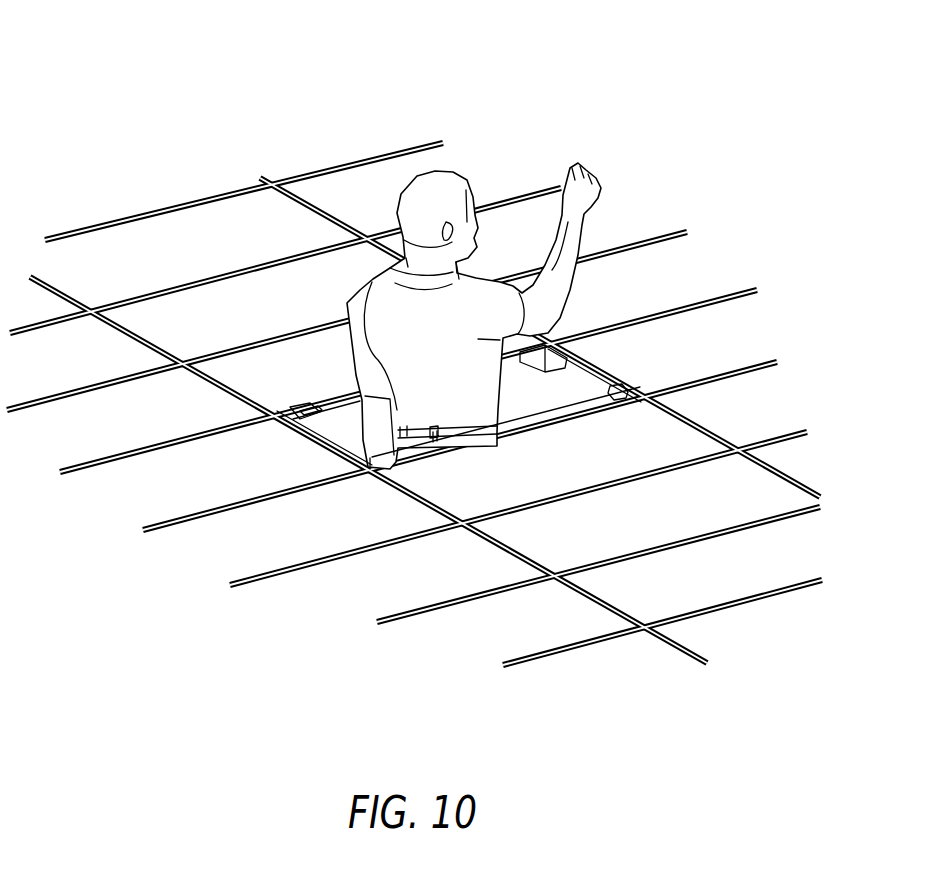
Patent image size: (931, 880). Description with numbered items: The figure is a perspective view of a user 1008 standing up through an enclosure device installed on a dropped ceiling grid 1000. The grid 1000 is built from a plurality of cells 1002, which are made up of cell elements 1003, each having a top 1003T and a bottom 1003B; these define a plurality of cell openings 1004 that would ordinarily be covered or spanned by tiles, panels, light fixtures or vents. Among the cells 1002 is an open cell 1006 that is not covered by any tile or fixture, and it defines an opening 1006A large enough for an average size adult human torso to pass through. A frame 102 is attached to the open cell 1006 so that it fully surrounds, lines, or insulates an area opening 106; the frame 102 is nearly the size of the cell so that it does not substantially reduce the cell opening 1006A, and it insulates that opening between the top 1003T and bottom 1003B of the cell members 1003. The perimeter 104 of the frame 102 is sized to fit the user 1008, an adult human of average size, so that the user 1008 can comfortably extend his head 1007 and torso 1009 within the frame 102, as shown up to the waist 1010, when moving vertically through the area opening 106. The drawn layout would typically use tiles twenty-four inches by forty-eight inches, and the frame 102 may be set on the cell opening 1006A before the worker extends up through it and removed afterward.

The dropped ceiling grid 1000 is at (275, 52).
The cells 1002 is at (222, 550).
The cell openings 1004 is at (463, 635).
The cell elements 1003 is at (345, 462).
The top 1003T is at (238, 386).
The bottom 1003B is at (243, 394).
The open cell 1006 is at (620, 381).
The opening 1006A is at (313, 437).
The head 1007 is at (417, 173).
The user 1008 is at (592, 200).
The torso 1009 is at (357, 378).
The waist 1010 is at (440, 450).
The frame 102 is at (550, 417).
The perimeter 104 is at (510, 430).
The area opening 106 is at (588, 353).